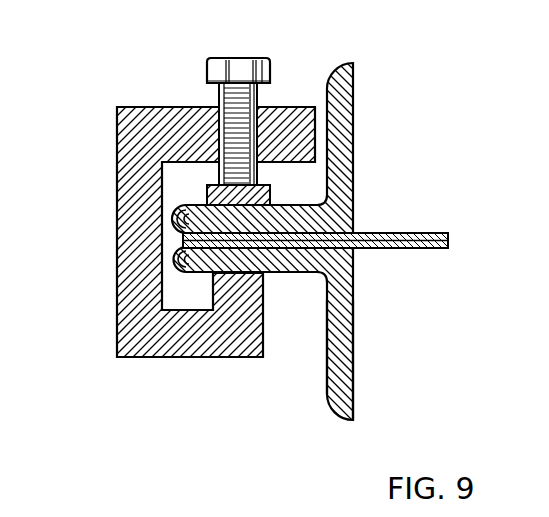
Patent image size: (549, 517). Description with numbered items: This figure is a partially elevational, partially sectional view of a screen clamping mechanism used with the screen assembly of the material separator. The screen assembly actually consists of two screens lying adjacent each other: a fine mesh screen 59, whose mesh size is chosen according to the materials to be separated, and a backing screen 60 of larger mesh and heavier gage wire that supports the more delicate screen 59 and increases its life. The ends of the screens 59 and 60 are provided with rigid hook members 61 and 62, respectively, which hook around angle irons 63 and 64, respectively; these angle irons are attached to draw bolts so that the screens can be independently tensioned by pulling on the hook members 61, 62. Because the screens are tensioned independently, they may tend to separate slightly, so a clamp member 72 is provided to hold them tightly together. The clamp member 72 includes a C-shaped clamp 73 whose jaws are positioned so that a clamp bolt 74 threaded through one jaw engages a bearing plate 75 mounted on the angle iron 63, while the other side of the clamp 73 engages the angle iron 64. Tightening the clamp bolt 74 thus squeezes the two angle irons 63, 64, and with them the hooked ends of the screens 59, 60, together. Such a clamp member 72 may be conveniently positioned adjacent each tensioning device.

The screen 59 is at (315, 239).
The backing screen 60 is at (428, 248).
The hook member 61 is at (178, 214).
The hook member 62 is at (178, 278).
The angle iron 63 is at (239, 241).
The angle iron 64 is at (350, 377).
The clamp member 72 is at (178, 186).
The C-shaped clamp 73 is at (125, 342).
The clamp bolt 74 is at (270, 67).
The bearing plate 75 is at (272, 193).